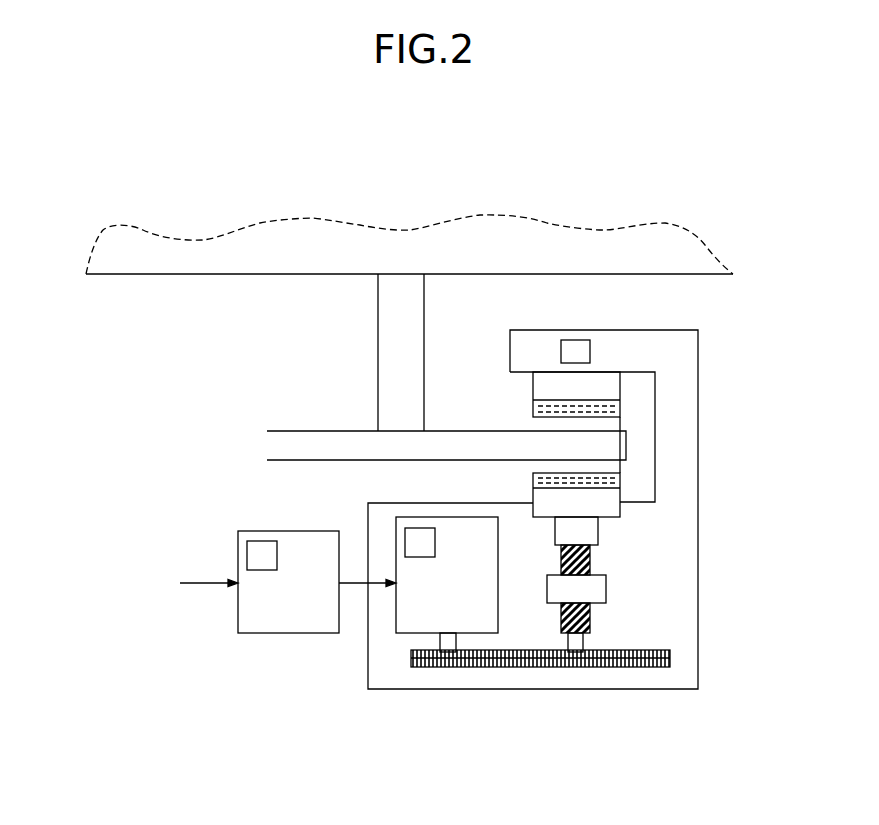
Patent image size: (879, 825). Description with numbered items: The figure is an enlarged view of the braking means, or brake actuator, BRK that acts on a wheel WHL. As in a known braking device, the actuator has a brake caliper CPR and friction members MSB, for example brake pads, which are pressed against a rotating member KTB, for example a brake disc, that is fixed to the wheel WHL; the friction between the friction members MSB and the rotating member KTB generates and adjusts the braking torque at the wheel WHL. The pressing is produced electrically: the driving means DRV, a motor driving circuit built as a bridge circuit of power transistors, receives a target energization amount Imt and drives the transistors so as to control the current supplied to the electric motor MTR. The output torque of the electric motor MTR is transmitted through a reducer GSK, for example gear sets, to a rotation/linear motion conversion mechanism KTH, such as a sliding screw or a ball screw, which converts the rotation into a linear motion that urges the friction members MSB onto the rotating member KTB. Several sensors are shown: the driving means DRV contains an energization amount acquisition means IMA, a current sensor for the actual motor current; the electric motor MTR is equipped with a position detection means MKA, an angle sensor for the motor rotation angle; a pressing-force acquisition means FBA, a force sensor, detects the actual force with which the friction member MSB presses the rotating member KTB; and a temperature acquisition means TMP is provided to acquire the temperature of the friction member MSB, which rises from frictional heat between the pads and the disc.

The wheel WHL is at (580, 275).
The braking means BRK is at (266, 388).
The rotating member KTB is at (289, 431).
The brake caliper CPR is at (698, 340).
The temperature acquisition means TMP is at (557, 352).
The friction member MSB is at (533, 410).
The pressing-force acquisition means FBA is at (598, 527).
The rotation/linear motion conversion mechanism KTH is at (620, 587).
The reducer GSK is at (520, 670).
The electric motor MTR is at (447, 584).
The position detection means MKA is at (403, 541).
The driving means DRV is at (317, 582).
The energization amount acquisition means IMA is at (246, 555).
The target energization amount Imt is at (187, 582).